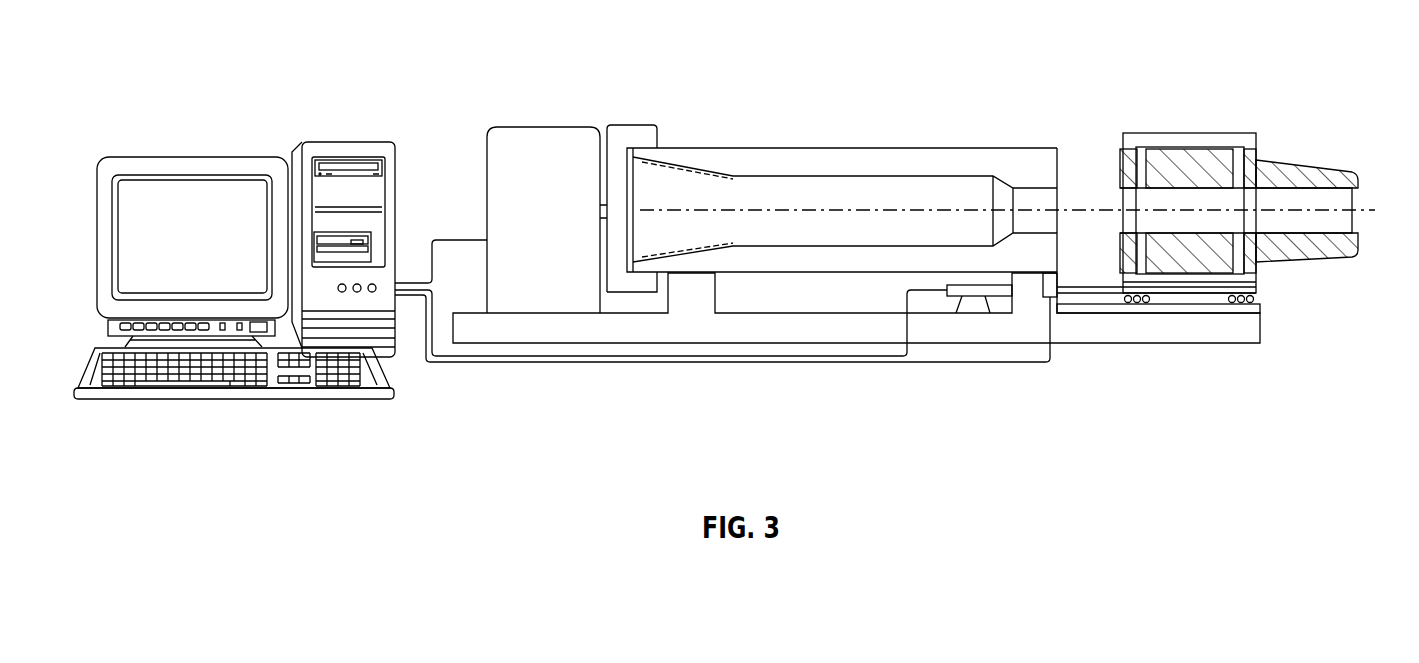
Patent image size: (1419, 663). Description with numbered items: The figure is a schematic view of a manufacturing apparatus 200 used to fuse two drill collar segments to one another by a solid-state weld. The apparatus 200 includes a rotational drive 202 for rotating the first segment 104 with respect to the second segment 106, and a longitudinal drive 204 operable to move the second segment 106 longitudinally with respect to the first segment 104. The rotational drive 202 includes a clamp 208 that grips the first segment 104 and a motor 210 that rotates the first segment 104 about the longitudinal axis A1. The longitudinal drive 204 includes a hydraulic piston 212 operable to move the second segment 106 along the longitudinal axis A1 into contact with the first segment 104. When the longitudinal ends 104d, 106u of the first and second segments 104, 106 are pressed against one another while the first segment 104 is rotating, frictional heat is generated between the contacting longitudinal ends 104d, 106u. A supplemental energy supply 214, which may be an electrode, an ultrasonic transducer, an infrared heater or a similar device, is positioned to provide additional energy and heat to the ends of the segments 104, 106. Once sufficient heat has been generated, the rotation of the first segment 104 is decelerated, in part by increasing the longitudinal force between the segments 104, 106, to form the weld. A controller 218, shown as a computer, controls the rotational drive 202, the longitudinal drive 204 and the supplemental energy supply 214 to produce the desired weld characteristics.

The manufacturing apparatus 200 is at (1320, 25).
The controller 218 is at (304, 134).
The motor 210 is at (510, 136).
The rotational drive 202 is at (605, 108).
The clamp 208 is at (650, 141).
The first segment 104 is at (977, 162).
The longitudinal end of the first segment 104d is at (1063, 165).
The longitudinal axis A1 is at (765, 208).
The second segment 106 is at (1317, 170).
The longitudinal end of the second segment 106u is at (1114, 173).
The hydraulic piston 212 is at (955, 292).
The supplemental energy supply 214 is at (1053, 283).
The longitudinal drive 204 is at (1016, 374).